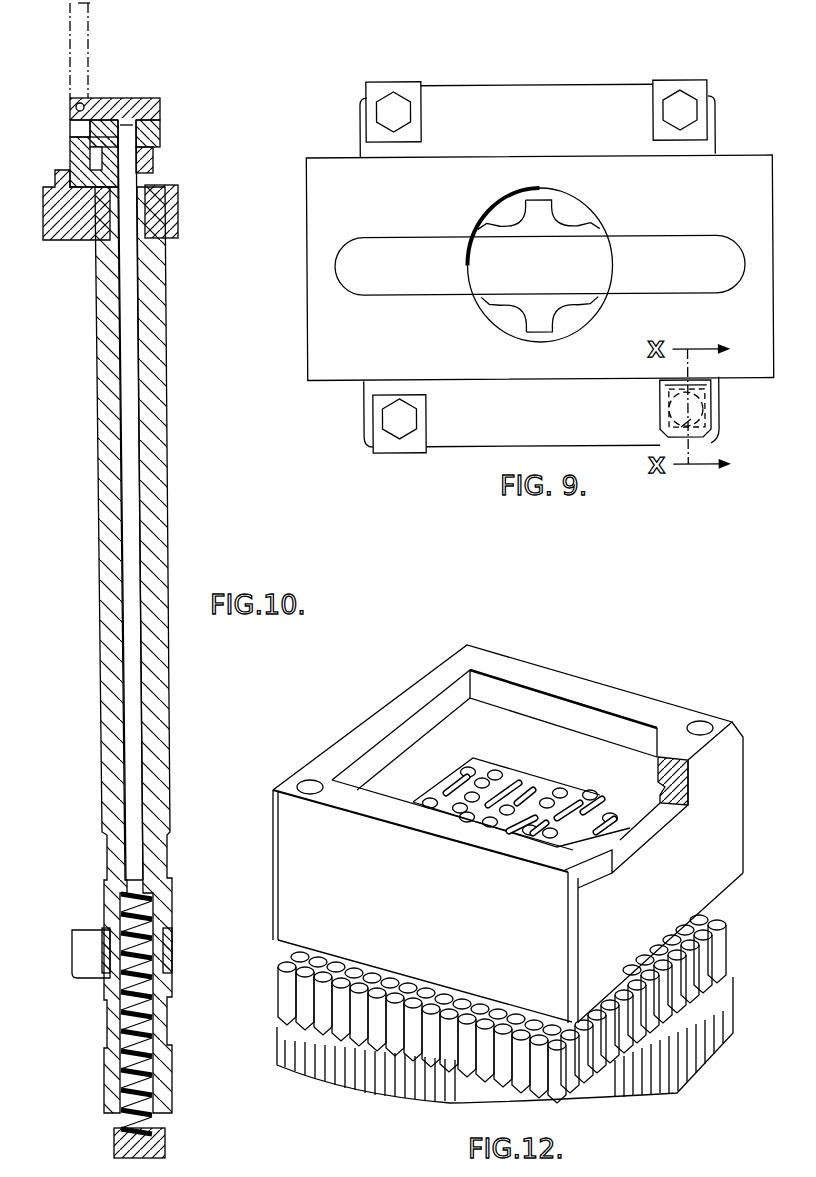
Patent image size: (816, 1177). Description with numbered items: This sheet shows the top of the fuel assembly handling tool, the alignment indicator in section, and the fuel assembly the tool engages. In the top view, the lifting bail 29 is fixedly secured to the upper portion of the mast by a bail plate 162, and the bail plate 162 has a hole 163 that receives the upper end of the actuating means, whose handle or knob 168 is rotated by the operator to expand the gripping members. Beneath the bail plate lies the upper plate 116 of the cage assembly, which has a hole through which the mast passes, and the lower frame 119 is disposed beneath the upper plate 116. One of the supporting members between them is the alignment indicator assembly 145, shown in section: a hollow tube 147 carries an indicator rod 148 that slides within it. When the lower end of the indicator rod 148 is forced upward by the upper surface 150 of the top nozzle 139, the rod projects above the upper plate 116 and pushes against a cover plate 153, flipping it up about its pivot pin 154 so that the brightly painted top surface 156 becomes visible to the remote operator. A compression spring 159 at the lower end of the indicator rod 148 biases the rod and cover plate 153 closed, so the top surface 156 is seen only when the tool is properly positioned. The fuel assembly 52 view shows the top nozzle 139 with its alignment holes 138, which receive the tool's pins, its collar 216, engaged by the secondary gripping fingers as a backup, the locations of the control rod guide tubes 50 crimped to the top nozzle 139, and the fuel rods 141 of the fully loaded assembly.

In FIG. 9, the lifting bail 29 is at (390, 252).
In FIG. 12, the guide tubes 50 is at (545, 800).
In FIG. 12, the fuel assembly 52 is at (786, 777).
In FIG. 10, the upper plate 116 is at (175, 215).
In FIG. 9, the upper plate 116 is at (480, 85).
In FIG. 10, the lower frame 119 is at (90, 937).
In FIG. 12, the alignment hole 138 is at (310, 780).
In FIG. 12, the top nozzle 139 is at (707, 863).
In FIG. 12, the fuel rods 141 is at (290, 968).
In FIG. 10, the alignment indicator assembly 145 is at (138, 650).
In FIG. 10, the hollow tube 147 is at (168, 445).
In FIG. 10, the indicator rod 148 is at (127, 652).
In FIG. 12, the upper surface 150 is at (470, 660).
In FIG. 10, the cover plate 153 is at (90, 37).
In FIG. 9, the cover plate 153 is at (711, 418).
In FIG. 10, the pin 154 is at (76, 107).
In FIG. 9, the pin 154 is at (668, 390).
In FIG. 10, the top surface 156 is at (143, 118).
In FIG. 9, the top surface 156 is at (692, 420).
In FIG. 10, the compression spring 159 is at (122, 1018).
In FIG. 9, the bail plate 162 is at (735, 155).
In FIG. 9, the hole 163 is at (497, 208).
In FIG. 9, the handle or knob 168 is at (585, 232).
In FIG. 12, the collar 216 is at (660, 788).